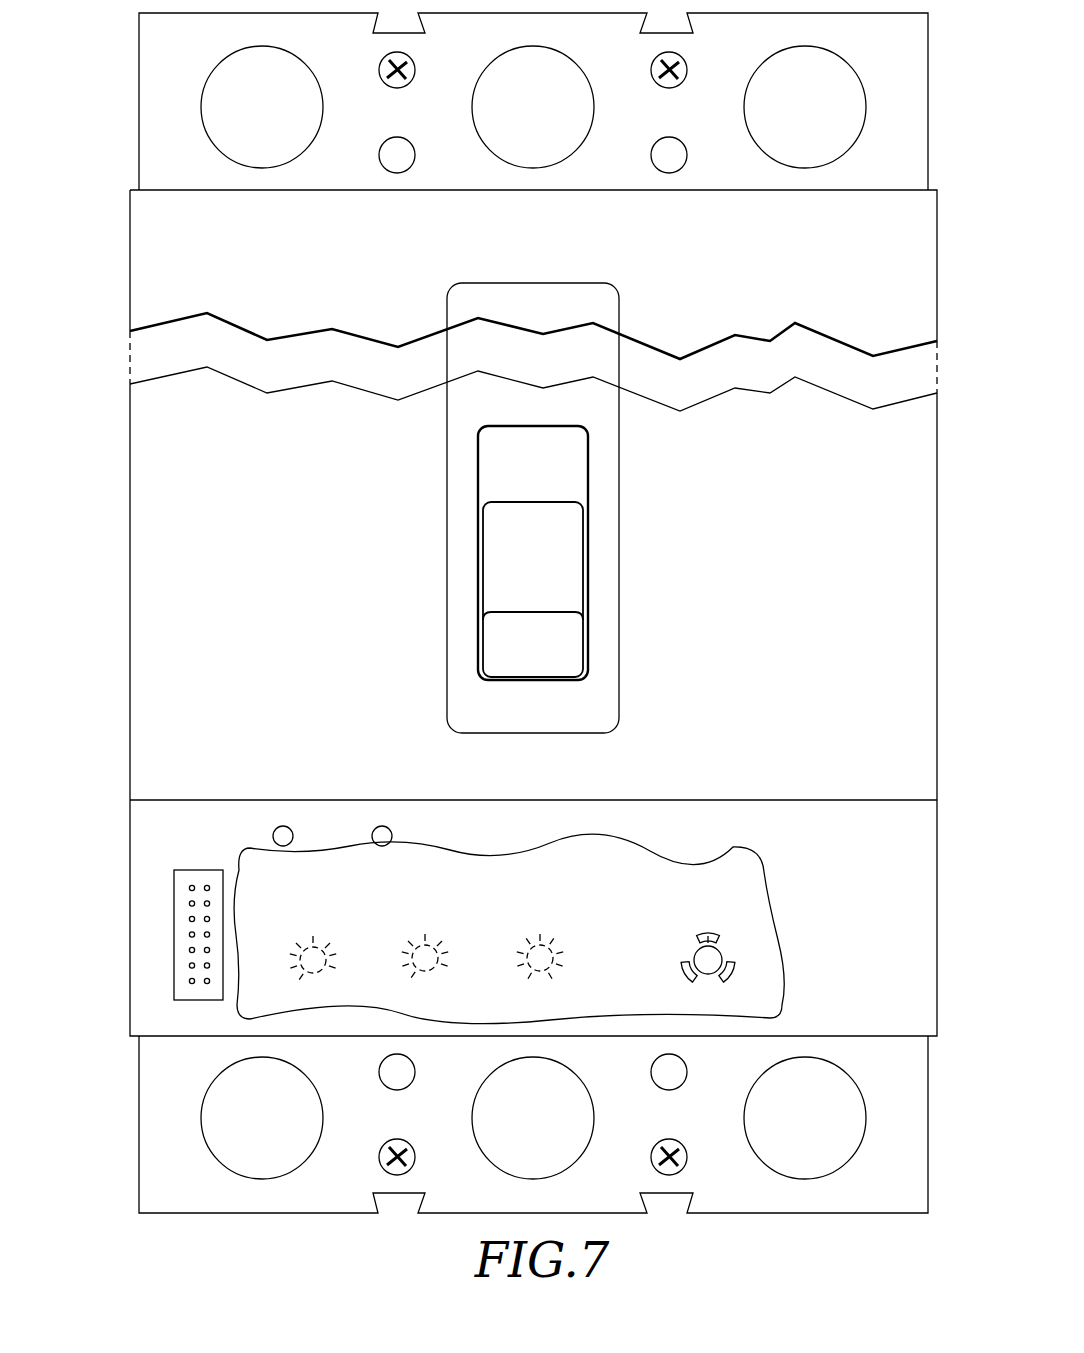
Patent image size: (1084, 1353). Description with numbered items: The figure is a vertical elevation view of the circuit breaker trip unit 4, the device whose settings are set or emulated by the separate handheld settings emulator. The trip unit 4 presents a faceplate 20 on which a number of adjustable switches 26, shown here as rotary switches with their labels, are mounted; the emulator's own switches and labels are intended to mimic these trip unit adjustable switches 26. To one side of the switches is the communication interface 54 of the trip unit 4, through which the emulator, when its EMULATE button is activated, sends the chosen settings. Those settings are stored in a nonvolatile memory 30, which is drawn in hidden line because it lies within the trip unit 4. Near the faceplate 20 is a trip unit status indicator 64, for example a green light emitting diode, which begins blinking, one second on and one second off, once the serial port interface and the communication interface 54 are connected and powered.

The circuit breaker trip unit 4 is at (122, 919).
The faceplate 20 is at (828, 830).
The nonvolatile memory 30 is at (560, 832).
The adjustable switches 26 is at (656, 928).
The communication interface 54 is at (192, 858).
The trip unit status indicator 64 is at (382, 826).